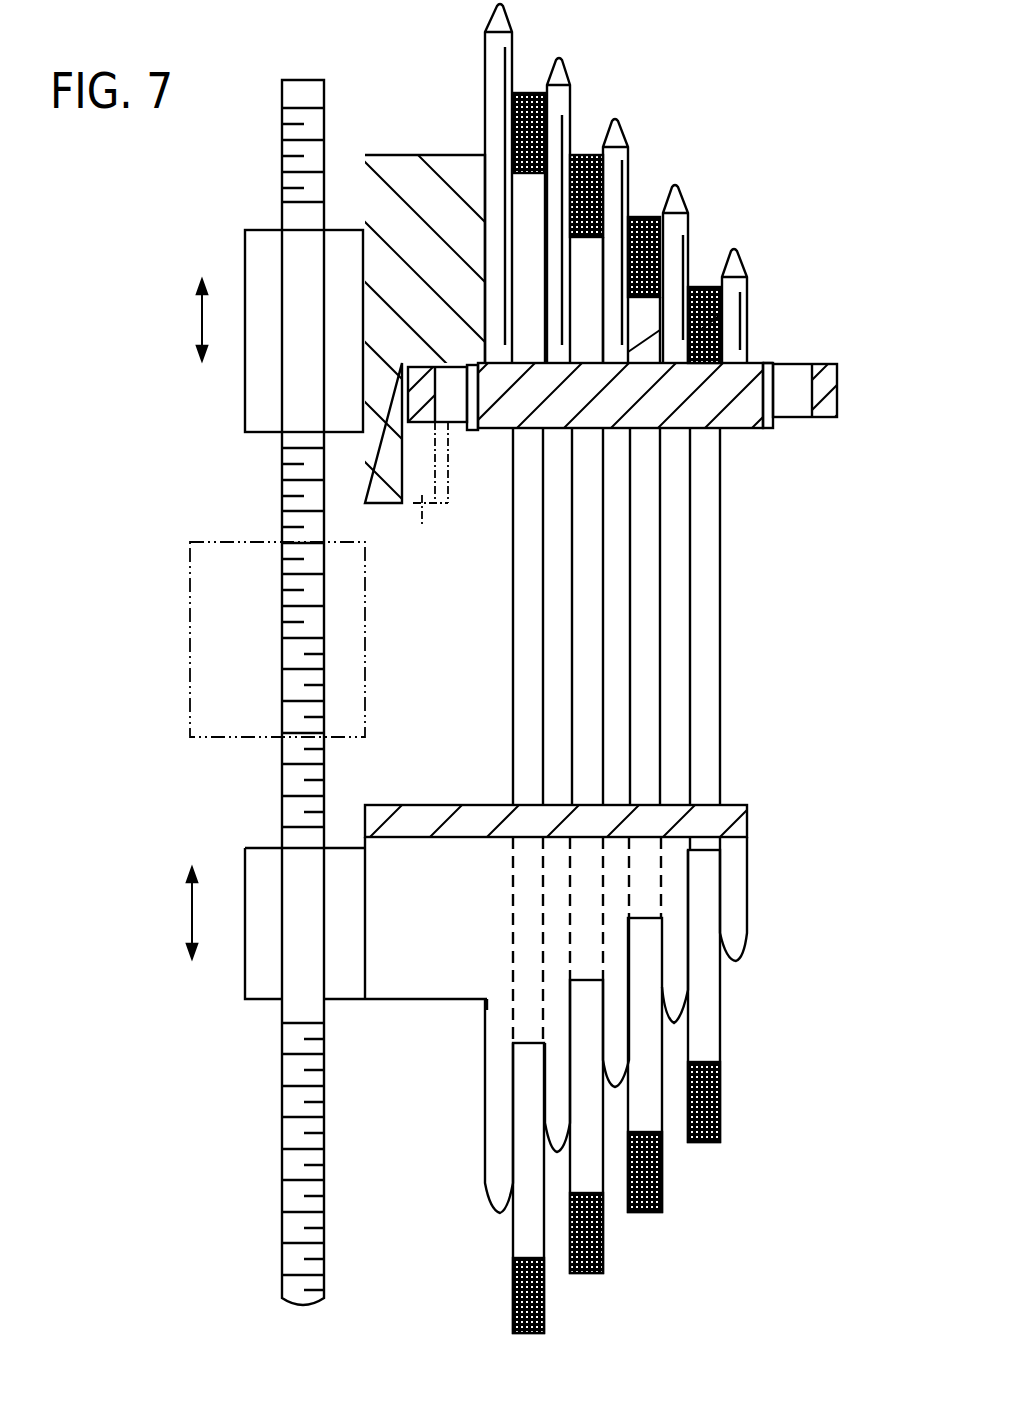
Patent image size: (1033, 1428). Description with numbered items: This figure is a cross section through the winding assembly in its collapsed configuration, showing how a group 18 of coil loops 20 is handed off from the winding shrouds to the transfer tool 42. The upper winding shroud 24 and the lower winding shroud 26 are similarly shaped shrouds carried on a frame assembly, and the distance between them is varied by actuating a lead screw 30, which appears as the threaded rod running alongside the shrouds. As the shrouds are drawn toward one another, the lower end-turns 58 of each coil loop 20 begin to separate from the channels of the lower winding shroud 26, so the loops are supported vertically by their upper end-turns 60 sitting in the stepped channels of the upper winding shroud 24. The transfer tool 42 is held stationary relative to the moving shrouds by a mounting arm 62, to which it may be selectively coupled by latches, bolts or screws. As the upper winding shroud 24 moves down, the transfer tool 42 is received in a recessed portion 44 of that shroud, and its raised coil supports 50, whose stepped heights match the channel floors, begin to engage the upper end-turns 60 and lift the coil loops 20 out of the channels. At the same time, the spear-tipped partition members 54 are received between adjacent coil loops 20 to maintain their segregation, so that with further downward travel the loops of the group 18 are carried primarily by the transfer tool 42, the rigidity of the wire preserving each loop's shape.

The group of coil windings 18 is at (480, 720).
The coil loop 20 is at (587, 150).
The upper winding shroud 24 is at (413, 160).
The lower winding shroud 26 is at (736, 848).
The lead screw 30 is at (292, 775).
The transfer tool 42 is at (735, 420).
The recessed portion 44 is at (465, 447).
The coil supports 50 is at (700, 287).
The partition members 54 is at (735, 322).
The lower end-turns 58 is at (663, 1286).
The upper end-turns 60 is at (768, 164).
The mounting arm 62 is at (430, 494).